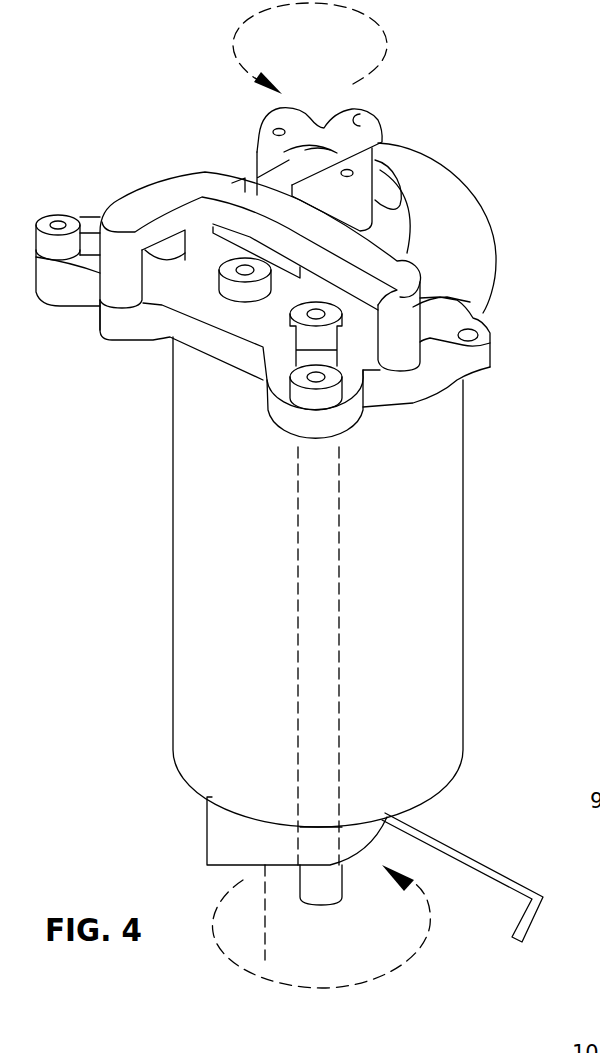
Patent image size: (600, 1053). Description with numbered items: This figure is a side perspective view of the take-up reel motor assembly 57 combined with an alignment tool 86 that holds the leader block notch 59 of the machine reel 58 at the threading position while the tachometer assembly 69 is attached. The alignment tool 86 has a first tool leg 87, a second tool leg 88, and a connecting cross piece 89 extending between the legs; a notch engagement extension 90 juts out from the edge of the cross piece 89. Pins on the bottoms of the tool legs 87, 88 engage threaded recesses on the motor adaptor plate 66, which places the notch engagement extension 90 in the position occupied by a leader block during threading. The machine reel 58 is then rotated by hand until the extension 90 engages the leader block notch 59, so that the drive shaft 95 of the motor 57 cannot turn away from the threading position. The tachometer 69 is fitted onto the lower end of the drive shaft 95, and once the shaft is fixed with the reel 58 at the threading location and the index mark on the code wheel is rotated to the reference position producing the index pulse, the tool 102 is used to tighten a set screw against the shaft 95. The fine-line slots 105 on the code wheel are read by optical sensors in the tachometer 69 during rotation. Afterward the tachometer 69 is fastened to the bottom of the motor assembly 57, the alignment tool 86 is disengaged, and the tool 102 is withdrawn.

The take-up reel motor assembly 57 is at (463, 668).
The machine reel 58 is at (267, 135).
The leader block notch 59 is at (333, 144).
The motor adaptor plate 66 is at (445, 177).
The tachometer assembly 69 is at (207, 839).
The alignment tool 86 is at (224, 237).
The first tool leg 87 is at (113, 282).
The second tool leg 88 is at (413, 307).
The connecting cross piece 89 is at (233, 185).
The notch engagement extension 90 is at (280, 158).
The drive shaft 95 is at (297, 580).
The tool 102 is at (468, 850).
The fine-line slots 105 is at (265, 940).